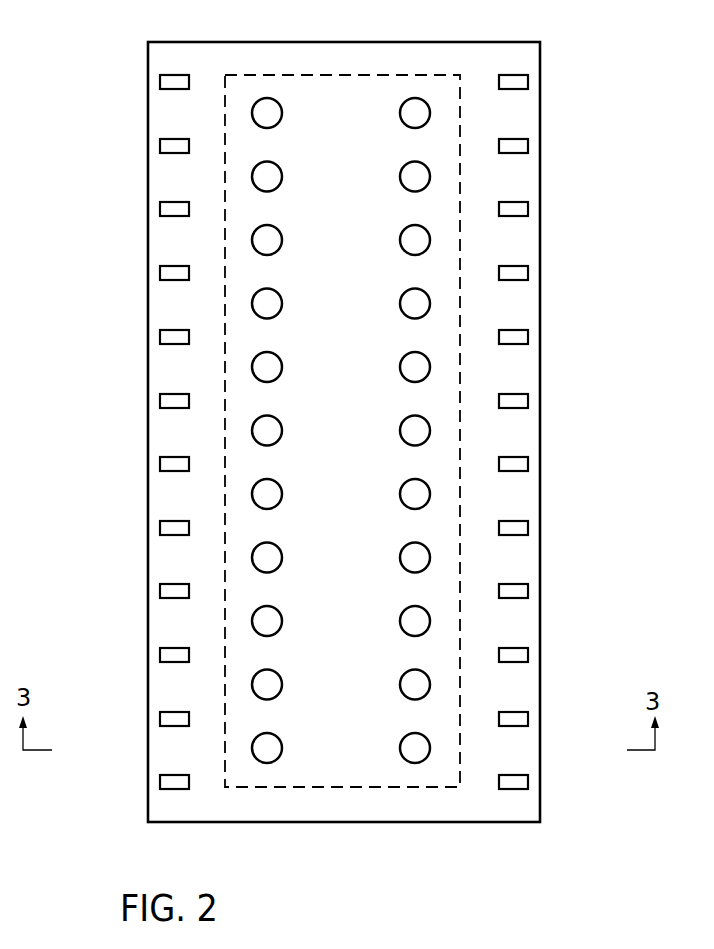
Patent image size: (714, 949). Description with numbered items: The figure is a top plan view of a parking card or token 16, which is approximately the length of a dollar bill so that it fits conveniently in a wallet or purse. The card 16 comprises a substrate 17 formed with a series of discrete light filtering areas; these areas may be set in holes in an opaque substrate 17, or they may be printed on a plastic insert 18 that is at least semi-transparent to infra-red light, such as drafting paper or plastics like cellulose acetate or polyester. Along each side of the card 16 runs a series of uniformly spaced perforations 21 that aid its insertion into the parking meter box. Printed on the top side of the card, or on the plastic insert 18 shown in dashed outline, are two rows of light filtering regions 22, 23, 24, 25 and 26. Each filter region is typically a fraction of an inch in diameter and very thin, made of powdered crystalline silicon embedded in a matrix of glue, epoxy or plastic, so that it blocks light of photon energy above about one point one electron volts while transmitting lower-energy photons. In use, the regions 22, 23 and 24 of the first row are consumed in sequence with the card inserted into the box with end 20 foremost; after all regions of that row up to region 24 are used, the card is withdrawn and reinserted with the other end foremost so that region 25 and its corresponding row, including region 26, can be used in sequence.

The parking card or token 16 is at (346, 416).
The substrate 17 is at (382, 425).
The plastic insert 18 is at (445, 577).
The end 20 is at (527, 53).
The perforations 21 is at (165, 85).
The light filtering region 22 is at (268, 113).
The light filtering region 23 is at (266, 685).
The light filtering region 24 is at (266, 748).
The light filtering region 25 is at (416, 748).
The light filtering region 26 is at (416, 113).